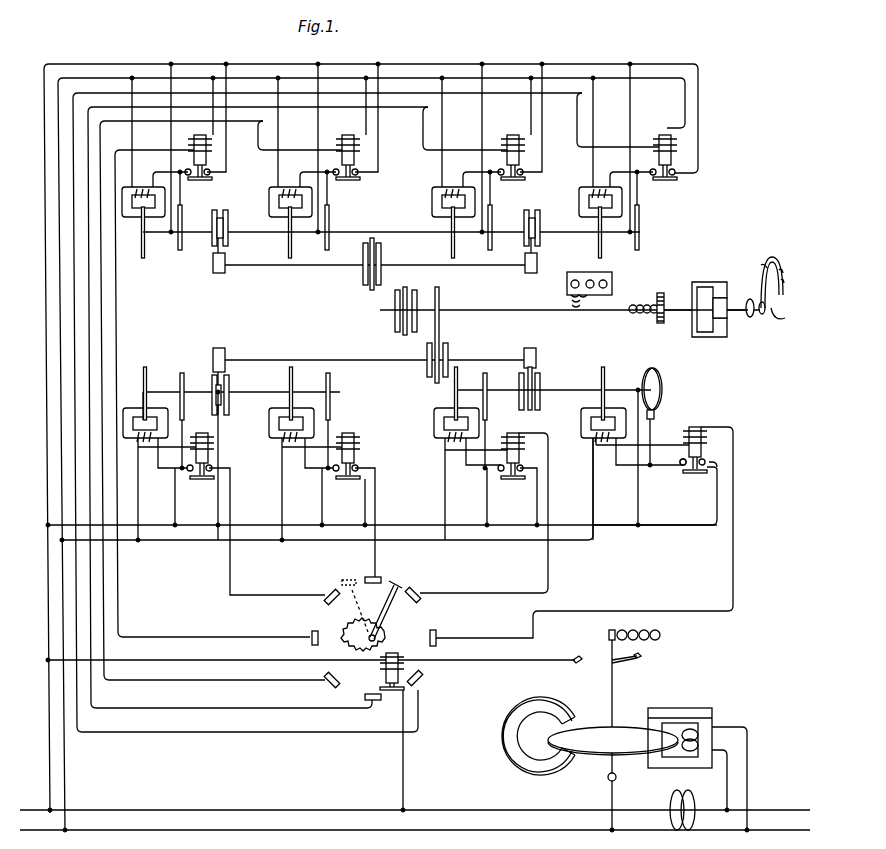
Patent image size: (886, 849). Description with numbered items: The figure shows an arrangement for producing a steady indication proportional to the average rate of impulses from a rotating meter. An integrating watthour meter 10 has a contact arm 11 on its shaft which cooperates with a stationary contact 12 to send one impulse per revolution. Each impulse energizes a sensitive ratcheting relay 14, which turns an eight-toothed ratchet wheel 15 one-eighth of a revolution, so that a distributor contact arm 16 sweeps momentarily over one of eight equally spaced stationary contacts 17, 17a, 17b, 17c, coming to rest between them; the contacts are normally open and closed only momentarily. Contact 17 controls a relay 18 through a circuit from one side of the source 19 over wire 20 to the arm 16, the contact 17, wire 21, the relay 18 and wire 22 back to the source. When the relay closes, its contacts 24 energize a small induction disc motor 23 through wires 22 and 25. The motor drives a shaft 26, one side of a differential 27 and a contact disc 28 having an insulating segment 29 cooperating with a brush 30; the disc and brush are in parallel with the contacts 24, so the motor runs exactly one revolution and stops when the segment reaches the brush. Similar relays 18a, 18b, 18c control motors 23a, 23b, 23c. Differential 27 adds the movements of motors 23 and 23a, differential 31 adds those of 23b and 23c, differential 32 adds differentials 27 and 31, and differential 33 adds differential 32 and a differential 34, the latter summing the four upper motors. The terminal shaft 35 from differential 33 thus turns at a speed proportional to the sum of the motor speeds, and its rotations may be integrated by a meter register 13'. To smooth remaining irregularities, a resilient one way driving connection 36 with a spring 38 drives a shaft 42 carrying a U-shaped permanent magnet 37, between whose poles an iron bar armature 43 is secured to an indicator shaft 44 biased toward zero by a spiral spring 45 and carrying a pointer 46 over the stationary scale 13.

The integrating watthour meter 10 is at (624, 730).
The contact arm 11 is at (636, 662).
The stationary contact 12 is at (570, 663).
The scale 13 is at (763, 275).
The meter register 13' is at (601, 281).
The ratcheting relay 14 is at (380, 672).
The ratchet wheel 15 is at (357, 639).
The distributor contact arm 16 is at (400, 582).
The stationary contact 17 is at (438, 635).
The stationary contact 17a is at (420, 600).
The stationary contact 17b is at (381, 577).
The stationary contact 17c is at (324, 604).
The relay 18 is at (706, 430).
The relay 18a is at (527, 452).
The relay 18b is at (345, 430).
The relay 18c is at (215, 447).
The source 19 is at (415, 821).
The wire 20 is at (229, 662).
The wire 21 is at (731, 570).
The wire 22 is at (592, 498).
The induction disc motor 23 is at (580, 415).
The induction disc motor 23a is at (434, 424).
The induction disc motor 23b is at (268, 430).
The induction disc motor 23c is at (133, 400).
The contacts of relay 24 is at (680, 470).
The wire 25 is at (614, 526).
The shaft 26 is at (569, 388).
The differential 27 is at (542, 375).
The contact disc 28 is at (644, 375).
The insulating segment 29 is at (660, 405).
The brush 30 is at (656, 415).
The differential 31 is at (224, 392).
The differential 32 is at (452, 363).
The differential 33 is at (414, 295).
The differential 34 is at (383, 257).
The terminal shaft 35 is at (472, 310).
The resilient one way driving connection 36 is at (664, 291).
The U-shaped permanent magnet 37 is at (703, 282).
The spring 38 is at (640, 315).
The shaft 42 is at (682, 316).
The iron bar armature 43 is at (722, 320).
The indicator shaft 44 is at (780, 320).
The spiral spring 45 is at (752, 316).
The pointer 46 is at (760, 303).